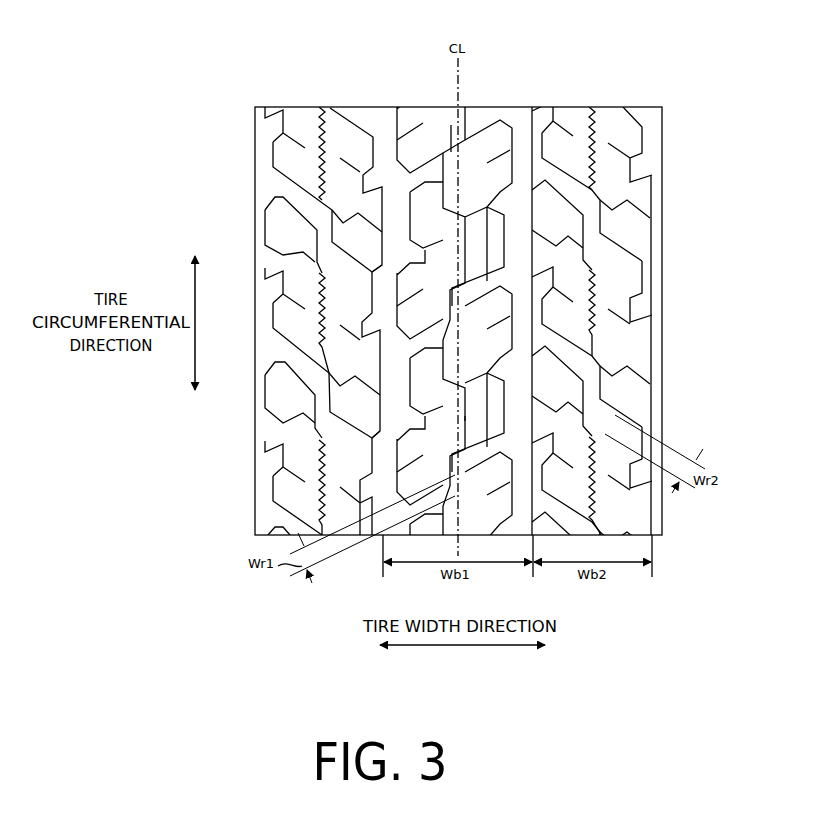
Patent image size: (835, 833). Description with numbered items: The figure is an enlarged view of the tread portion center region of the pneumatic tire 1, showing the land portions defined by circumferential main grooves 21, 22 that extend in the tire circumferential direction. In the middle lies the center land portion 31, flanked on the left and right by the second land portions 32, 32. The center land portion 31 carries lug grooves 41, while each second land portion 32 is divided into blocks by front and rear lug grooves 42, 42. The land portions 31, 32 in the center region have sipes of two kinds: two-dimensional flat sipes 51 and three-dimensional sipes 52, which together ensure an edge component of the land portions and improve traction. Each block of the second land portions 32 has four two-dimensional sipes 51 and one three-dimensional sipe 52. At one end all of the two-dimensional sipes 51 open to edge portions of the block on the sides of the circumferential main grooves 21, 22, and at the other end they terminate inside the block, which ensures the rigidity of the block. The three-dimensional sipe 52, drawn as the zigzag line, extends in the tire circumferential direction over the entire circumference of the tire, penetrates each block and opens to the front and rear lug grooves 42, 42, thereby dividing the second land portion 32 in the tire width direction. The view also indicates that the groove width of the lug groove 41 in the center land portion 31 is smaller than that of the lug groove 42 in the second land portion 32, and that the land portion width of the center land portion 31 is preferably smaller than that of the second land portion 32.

The pneumatic tire 1 is at (639, 46).
The circumferential main groove 21 is at (382, 107).
The circumferential main groove 22 is at (262, 107).
The center land portion 31 is at (471, 105).
The second land portion 32 is at (313, 106).
The lug groove 41 is at (491, 320).
The lug groove 42 is at (277, 188).
The two-dimensional sipe 51 is at (283, 268).
The three-dimensional sipe 52 is at (317, 344).